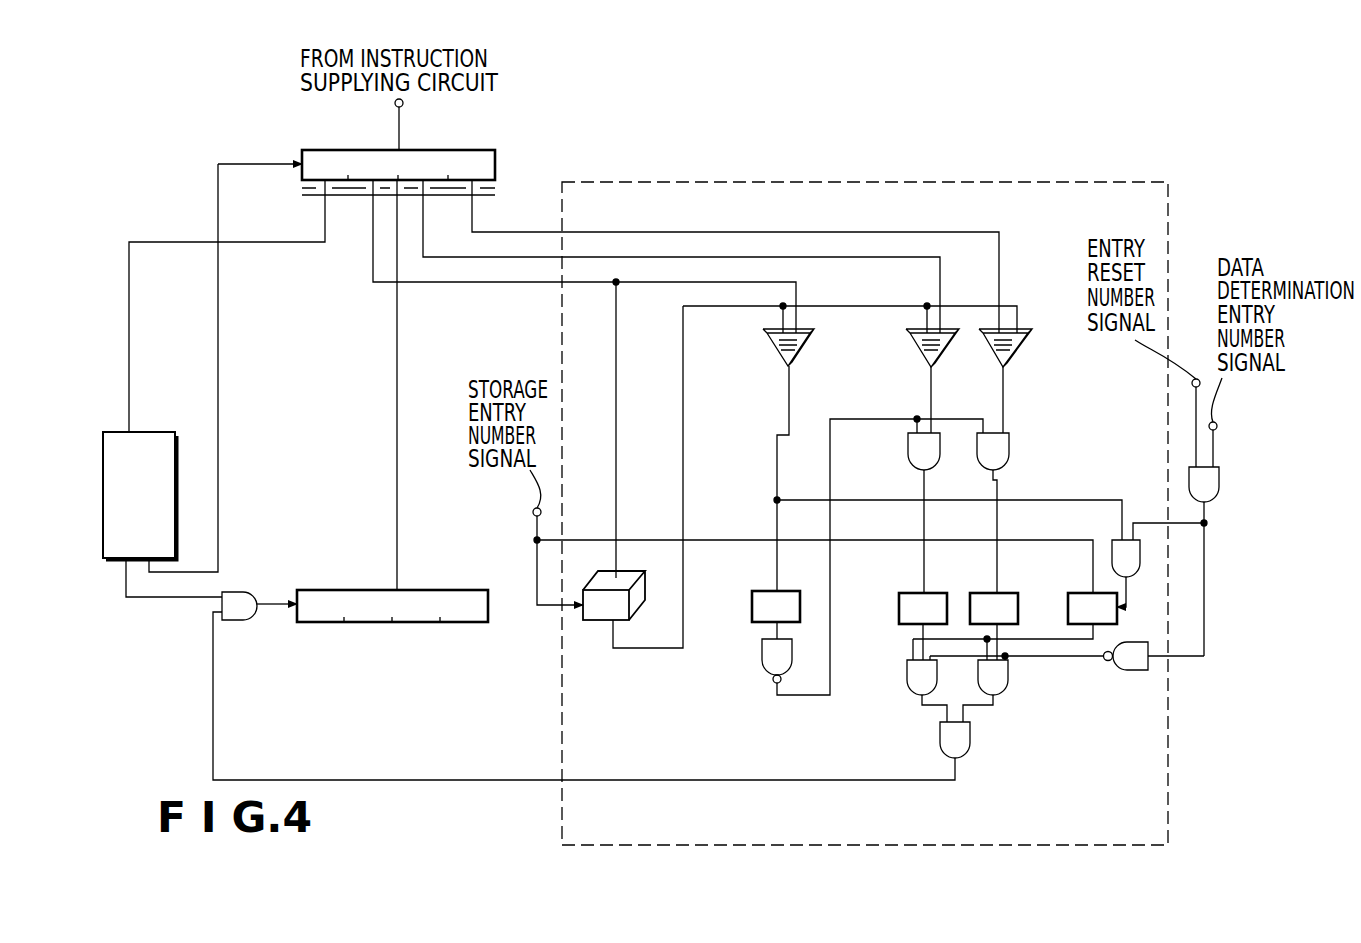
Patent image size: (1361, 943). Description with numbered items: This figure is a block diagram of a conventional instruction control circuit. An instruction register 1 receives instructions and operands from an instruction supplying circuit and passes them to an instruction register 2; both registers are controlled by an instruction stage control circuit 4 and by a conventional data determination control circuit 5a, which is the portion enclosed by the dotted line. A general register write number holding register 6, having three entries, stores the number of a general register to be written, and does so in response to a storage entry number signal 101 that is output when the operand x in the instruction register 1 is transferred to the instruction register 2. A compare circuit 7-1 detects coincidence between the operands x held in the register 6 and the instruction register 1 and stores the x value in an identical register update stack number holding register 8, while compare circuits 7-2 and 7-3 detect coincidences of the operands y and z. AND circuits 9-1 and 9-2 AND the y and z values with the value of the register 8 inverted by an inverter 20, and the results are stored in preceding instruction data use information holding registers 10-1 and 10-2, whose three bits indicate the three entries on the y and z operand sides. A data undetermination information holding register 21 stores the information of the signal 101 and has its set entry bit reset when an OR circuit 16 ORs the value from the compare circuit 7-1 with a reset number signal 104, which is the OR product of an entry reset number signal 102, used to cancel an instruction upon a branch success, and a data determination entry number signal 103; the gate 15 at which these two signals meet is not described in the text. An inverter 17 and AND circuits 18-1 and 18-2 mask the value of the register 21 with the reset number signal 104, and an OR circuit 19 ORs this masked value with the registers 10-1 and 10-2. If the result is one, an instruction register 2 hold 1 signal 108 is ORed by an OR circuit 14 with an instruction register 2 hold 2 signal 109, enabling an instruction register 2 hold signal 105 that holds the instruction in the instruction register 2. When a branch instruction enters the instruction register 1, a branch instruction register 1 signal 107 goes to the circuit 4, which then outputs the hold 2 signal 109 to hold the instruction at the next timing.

The instruction register 1 is at (312, 150).
The instruction register 2 is at (456, 590).
The instruction stage control circuit 4 is at (166, 431).
The data determination control circuit 5a is at (587, 181).
The general register write number holding register 6 is at (600, 622).
The compare circuit 7-1 is at (806, 346).
The compare circuit 7-2 is at (951, 348).
The compare circuit 7-3 is at (1024, 348).
The identical register update stack number holding register 8 is at (760, 590).
The AND circuit 9-1 is at (907, 450).
The AND circuit 9-2 is at (1010, 450).
The preceding instruction data use information holding register 10-1 is at (910, 592).
The preceding instruction data use information holding register 10-2 is at (1010, 592).
The OR circuit 14 is at (245, 622).
The AND gate 15 is at (1219, 490).
The OR circuit 16 is at (1138, 572).
The inverter 17 is at (1130, 672).
The AND circuit 18-1 is at (906, 678).
The AND circuit 18-2 is at (1009, 678).
The OR circuit 19 is at (971, 744).
The inverter 20 is at (760, 662).
The data undetermination information holding register 21 is at (1088, 592).
The storage entry number signal 101 is at (537, 547).
The entry reset number signal 102 is at (1196, 437).
The data determination entry number signal 103 is at (1213, 446).
The reset number signal 104 is at (1204, 584).
The instruction register 2 hold signal 105 is at (275, 601).
The branch instruction register 1 signal 107 is at (162, 241).
The instruction register 2 hold 1 signal 108 is at (276, 779).
The instruction register 2 hold 2 signal 109 is at (167, 598).